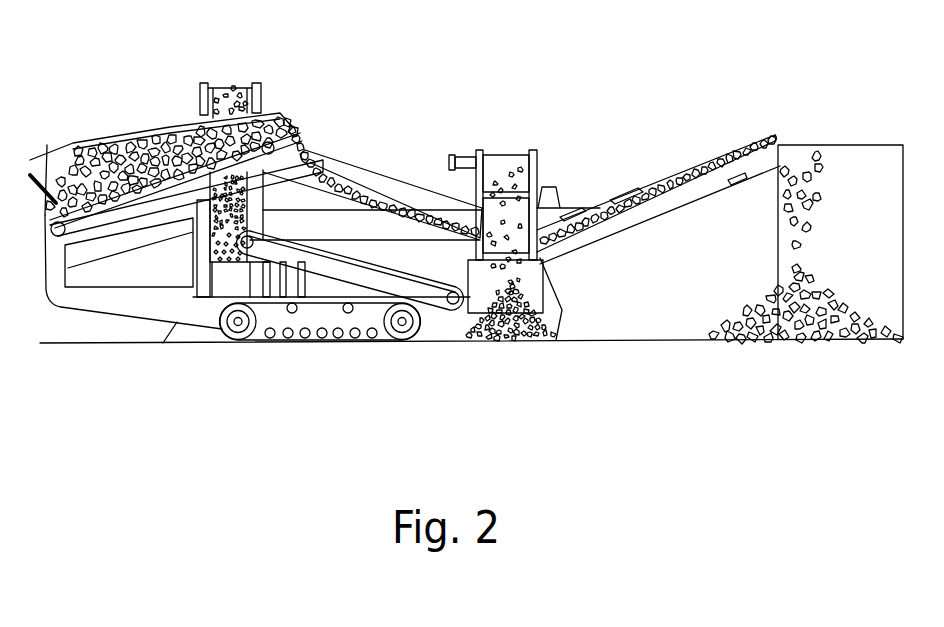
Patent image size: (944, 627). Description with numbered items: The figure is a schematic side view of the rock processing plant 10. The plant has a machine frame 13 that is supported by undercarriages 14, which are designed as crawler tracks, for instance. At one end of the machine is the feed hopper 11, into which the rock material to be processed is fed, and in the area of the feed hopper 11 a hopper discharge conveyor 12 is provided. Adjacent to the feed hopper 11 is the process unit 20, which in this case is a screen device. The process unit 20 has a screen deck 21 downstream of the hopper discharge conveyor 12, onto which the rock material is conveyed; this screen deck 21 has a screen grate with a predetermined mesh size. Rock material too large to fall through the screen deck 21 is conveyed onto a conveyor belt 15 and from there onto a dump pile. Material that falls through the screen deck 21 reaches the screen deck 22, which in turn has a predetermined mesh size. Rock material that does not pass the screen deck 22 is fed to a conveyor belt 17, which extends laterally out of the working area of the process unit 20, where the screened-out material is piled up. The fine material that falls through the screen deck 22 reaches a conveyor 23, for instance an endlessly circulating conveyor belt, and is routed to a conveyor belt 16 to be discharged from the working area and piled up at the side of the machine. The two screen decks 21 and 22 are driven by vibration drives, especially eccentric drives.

The rock processing plant 10 is at (405, 98).
The feed hopper 11 is at (127, 137).
The hopper discharge conveyor 12 is at (69, 140).
The machine frame 13 is at (157, 305).
The undercarriages 14 is at (320, 320).
The conveyor belt 15 is at (712, 180).
The conveyor belt 16 is at (261, 93).
The conveyor belt 17 is at (537, 163).
The process unit 20 is at (440, 180).
The screen deck 21 is at (373, 207).
The screen deck 22 is at (322, 210).
The conveyor 23 is at (433, 295).